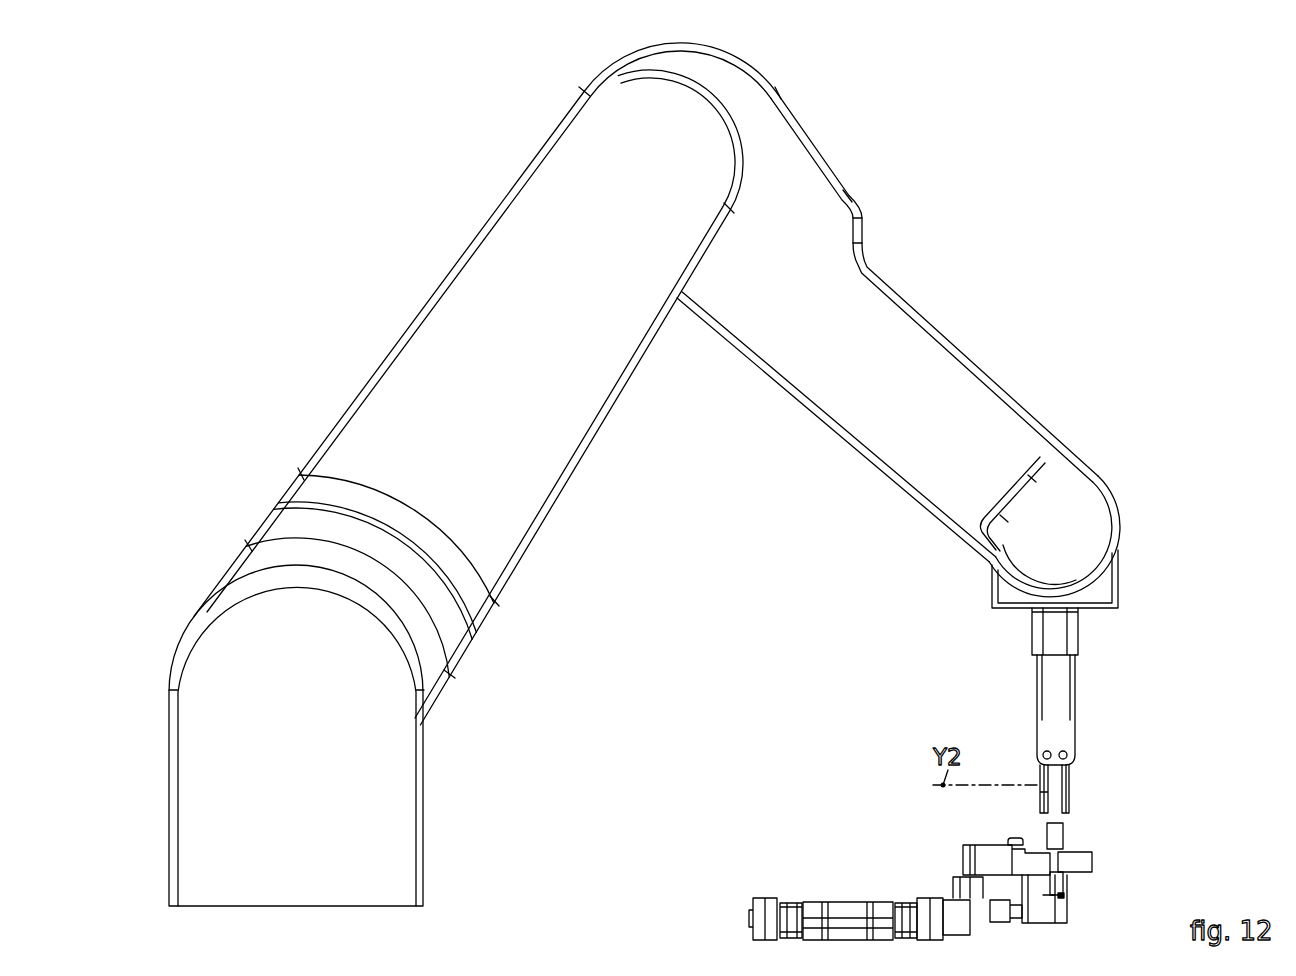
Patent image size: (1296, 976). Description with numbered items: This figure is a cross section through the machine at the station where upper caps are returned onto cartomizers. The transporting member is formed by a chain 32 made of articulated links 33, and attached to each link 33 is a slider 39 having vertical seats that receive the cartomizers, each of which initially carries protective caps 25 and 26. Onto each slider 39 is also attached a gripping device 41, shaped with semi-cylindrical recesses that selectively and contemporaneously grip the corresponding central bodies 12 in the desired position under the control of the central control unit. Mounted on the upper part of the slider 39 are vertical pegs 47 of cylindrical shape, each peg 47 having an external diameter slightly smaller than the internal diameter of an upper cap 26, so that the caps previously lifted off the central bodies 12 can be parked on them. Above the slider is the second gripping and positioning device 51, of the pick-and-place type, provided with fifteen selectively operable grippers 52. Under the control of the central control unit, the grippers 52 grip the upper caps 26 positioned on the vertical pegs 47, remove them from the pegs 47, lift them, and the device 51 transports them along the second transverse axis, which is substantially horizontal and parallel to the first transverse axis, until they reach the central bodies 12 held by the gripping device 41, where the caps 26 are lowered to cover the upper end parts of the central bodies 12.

The second gripping and positioning device 51 is at (869, 414).
The grippers 52 is at (1066, 793).
The vertical peg 47 is at (1013, 838).
The upper cap 26 is at (1058, 831).
The slider 39 is at (988, 860).
The gripping device 41 is at (1082, 862).
The central body 12 is at (1063, 880).
The protective cap 25 is at (1061, 896).
The chain 32 is at (768, 888).
The link 33 is at (845, 917).